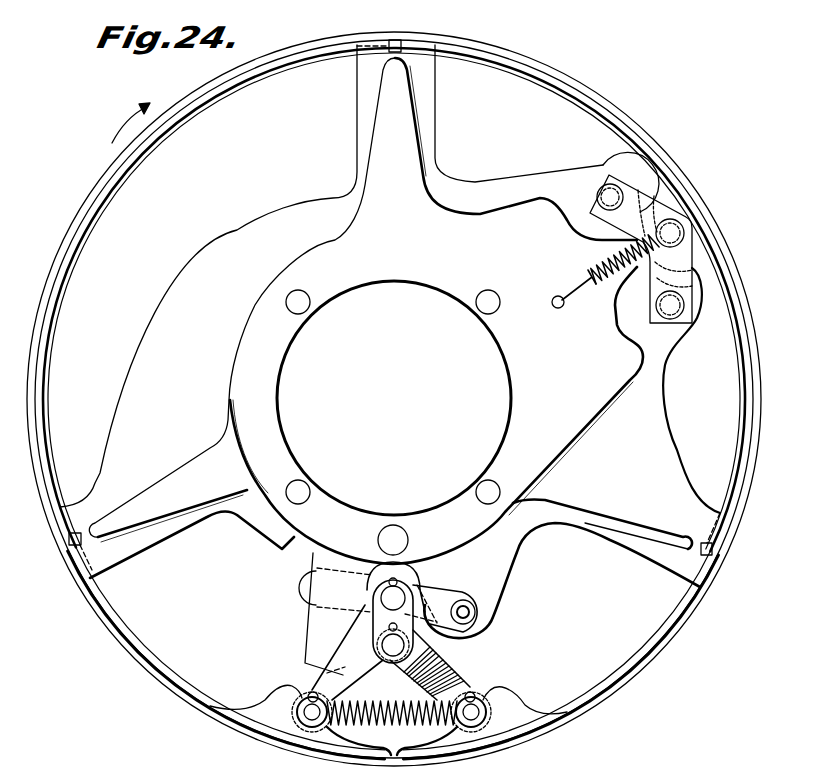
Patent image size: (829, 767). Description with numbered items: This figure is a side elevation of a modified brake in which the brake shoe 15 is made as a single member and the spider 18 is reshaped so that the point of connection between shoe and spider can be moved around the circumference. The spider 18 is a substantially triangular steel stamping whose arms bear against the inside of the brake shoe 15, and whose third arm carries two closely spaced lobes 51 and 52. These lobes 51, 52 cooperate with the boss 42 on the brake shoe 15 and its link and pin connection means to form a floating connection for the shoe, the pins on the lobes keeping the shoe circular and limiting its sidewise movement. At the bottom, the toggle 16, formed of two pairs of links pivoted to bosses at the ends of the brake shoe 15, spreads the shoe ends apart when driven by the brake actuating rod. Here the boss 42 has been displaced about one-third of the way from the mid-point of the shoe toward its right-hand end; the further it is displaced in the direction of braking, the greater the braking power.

The brake shoe 15 is at (103, 172).
The spider 18 is at (237, 233).
The lobe 51 is at (603, 159).
The boss 42 is at (681, 207).
The lobe 52 is at (697, 328).
The toggle 16 is at (462, 662).